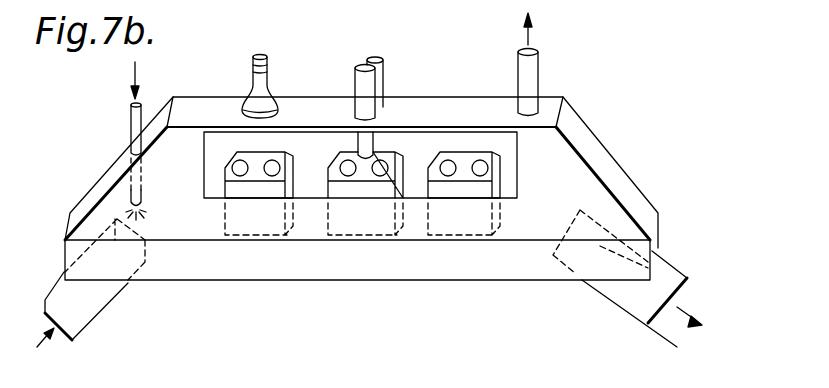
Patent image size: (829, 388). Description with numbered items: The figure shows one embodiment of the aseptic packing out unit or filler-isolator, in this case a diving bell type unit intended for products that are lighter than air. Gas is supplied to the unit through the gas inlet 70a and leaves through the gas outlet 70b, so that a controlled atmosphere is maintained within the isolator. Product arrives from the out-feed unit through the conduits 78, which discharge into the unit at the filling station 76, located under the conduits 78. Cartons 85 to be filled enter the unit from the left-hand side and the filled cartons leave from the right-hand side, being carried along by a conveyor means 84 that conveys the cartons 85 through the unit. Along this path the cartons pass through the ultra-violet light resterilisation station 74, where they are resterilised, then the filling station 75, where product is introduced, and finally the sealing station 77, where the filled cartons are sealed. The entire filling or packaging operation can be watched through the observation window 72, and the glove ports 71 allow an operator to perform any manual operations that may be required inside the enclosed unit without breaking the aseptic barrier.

The gas inlet 70a is at (137, 68).
The gas outlet 70b is at (532, 37).
The glove ports 71 is at (270, 162).
The observation window 72 is at (416, 186).
The U.V. resterilisation station 74 is at (266, 192).
The filling station 75 is at (269, 60).
The filling station 76 is at (360, 192).
The sealing station 77 is at (472, 188).
The conduits 78 is at (380, 64).
The conveyor means 84 is at (38, 355).
The cartons 85 is at (98, 305).